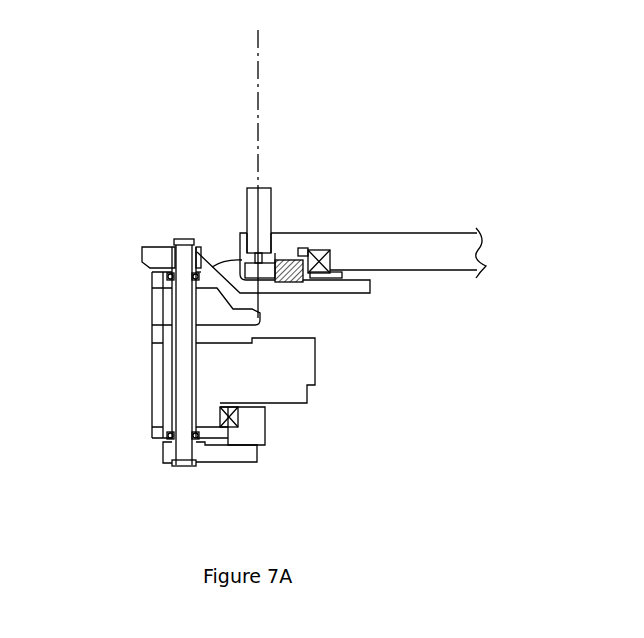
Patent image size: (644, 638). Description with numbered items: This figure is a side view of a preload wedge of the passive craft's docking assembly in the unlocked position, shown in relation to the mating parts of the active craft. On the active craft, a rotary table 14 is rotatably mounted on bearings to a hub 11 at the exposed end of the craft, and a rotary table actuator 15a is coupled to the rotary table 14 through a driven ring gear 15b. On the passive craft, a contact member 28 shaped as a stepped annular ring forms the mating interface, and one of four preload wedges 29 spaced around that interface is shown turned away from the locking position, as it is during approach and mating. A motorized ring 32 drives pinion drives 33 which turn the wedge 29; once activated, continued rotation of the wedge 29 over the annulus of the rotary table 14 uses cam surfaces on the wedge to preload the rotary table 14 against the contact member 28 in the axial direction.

The hub 11 is at (430, 257).
The rotary table 14 is at (352, 292).
The rotary table actuator 15a is at (264, 206).
The driven ring gear 15b is at (307, 258).
The contact member 28 is at (286, 324).
The preload wedge 29 is at (156, 247).
The motorized ring 32 is at (252, 426).
The pinion drive 33 is at (233, 454).